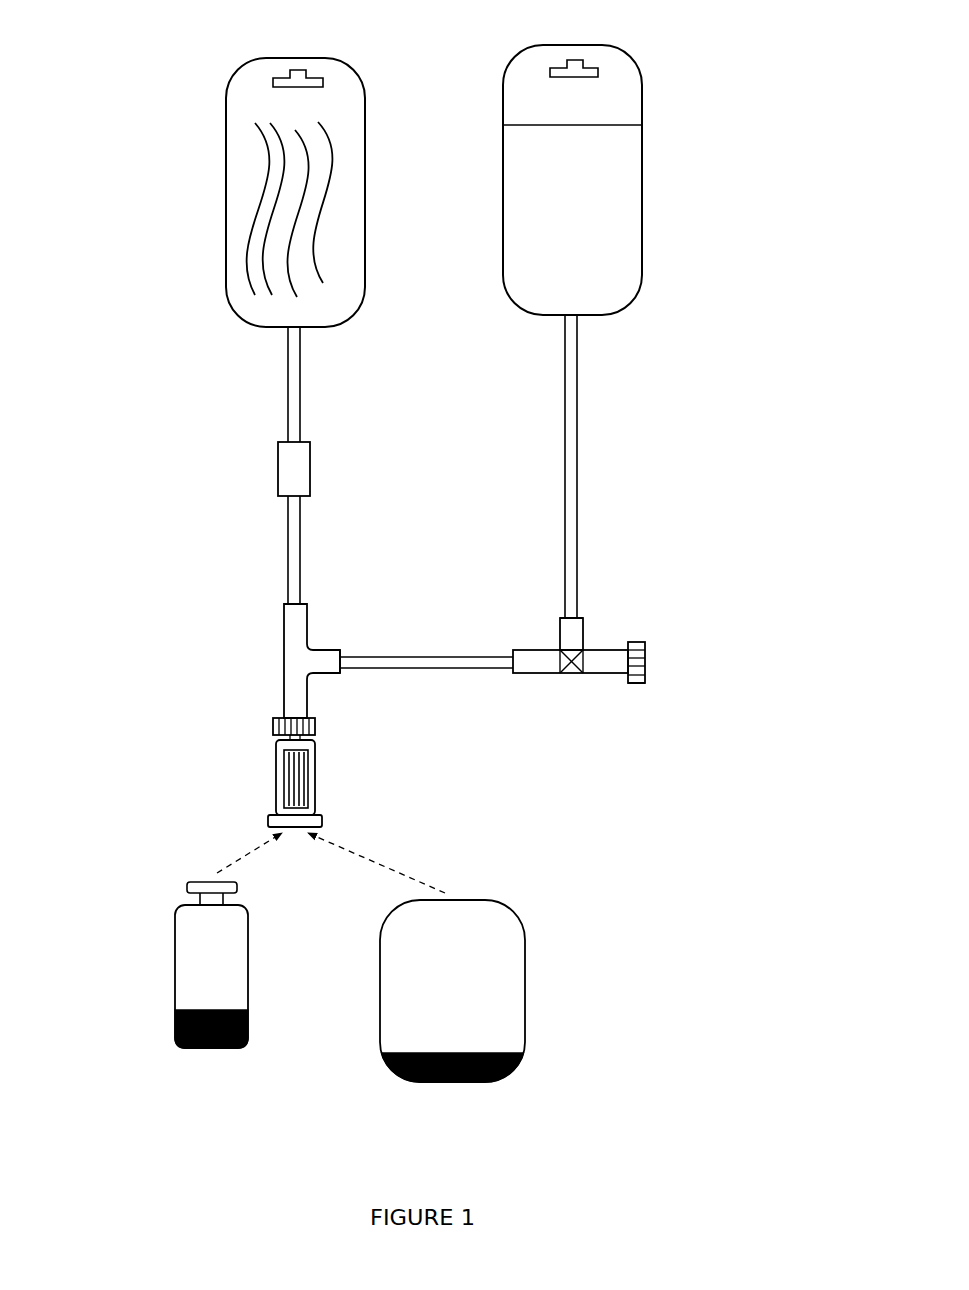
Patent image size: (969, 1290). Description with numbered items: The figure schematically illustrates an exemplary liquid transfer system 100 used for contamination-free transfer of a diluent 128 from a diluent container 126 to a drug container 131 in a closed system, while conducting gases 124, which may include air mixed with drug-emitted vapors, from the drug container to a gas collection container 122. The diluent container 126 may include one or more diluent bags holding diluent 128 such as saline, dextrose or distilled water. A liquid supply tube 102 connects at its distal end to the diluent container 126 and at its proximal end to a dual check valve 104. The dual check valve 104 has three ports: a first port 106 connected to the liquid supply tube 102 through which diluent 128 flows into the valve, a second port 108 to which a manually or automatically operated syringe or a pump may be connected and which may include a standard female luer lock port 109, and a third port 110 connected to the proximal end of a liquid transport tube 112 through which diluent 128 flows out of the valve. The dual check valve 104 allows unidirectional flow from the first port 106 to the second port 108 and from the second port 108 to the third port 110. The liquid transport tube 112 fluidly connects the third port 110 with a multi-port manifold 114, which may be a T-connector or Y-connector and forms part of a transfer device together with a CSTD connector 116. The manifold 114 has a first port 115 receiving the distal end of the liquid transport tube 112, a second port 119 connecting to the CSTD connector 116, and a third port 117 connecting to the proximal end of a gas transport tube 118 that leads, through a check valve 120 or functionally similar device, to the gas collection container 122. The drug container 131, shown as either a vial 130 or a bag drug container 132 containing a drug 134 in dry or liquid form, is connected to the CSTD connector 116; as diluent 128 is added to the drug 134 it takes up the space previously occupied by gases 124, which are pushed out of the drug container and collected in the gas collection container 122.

The liquid transfer system 100 is at (177, 145).
The liquid supply tube 102 is at (577, 410).
The dual check valve 104 is at (578, 637).
The first port 106 is at (568, 617).
The second port 108 is at (650, 655).
The female luer lock port 109 is at (635, 690).
The third port 110 is at (513, 675).
The liquid transport tube 112 is at (425, 662).
The multi-port manifold 114 is at (300, 650).
The first port 115 is at (340, 660).
The CSTD connector 116 is at (280, 760).
The third port 117 is at (293, 605).
The gas transport tube 118 is at (297, 552).
The second port 119 is at (280, 718).
The check valve 120 is at (310, 460).
The gas collection container 122 is at (226, 245).
The gases 124 is at (323, 228).
The diluent container 126 is at (641, 100).
The diluent 128 is at (615, 205).
The vial 130 is at (176, 925).
The drug container 131 is at (600, 870).
The bag drug container 132 is at (497, 900).
The drug 134 is at (405, 1055).